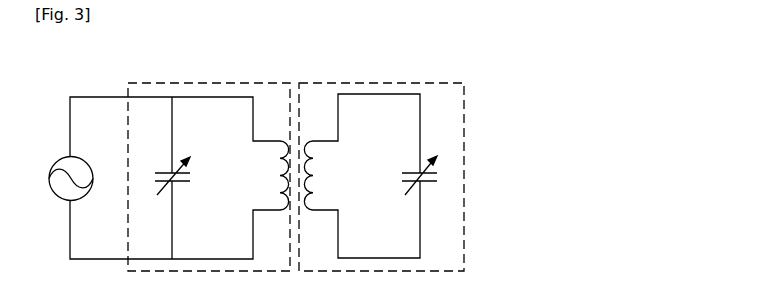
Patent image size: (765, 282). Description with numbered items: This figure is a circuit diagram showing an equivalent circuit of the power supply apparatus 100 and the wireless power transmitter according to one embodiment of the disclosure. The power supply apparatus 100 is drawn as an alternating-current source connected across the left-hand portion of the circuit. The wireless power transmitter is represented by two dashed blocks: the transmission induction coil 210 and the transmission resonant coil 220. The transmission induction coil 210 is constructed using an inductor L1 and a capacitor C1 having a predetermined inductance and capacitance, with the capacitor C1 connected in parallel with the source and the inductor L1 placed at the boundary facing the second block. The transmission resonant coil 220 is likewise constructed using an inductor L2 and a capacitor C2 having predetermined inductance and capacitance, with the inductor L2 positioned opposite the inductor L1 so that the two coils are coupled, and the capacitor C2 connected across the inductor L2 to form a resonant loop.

The power supply apparatus 100 is at (55, 158).
The transmission induction coil 210 is at (209, 155).
The transmission resonant coil 220 is at (381, 157).
The capacitor C1 is at (162, 176).
The inductor L1 is at (272, 175).
The inductor L2 is at (320, 175).
The capacitor C2 is at (431, 175).